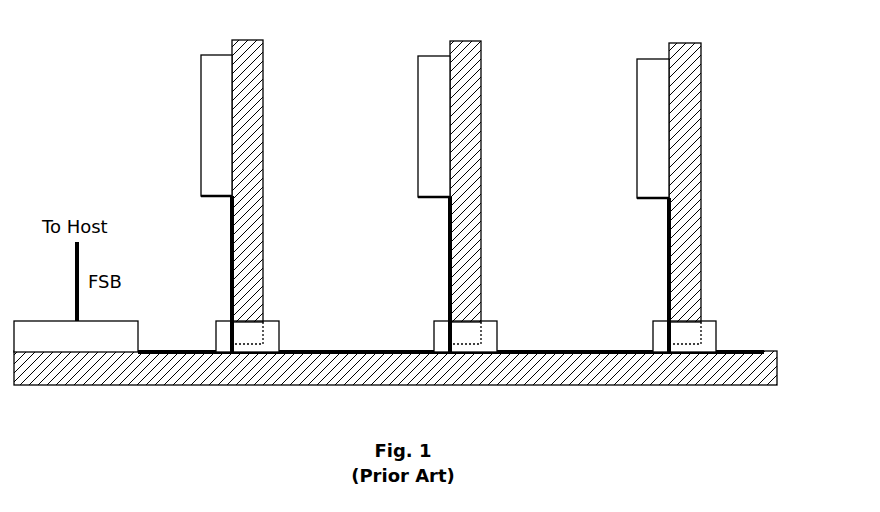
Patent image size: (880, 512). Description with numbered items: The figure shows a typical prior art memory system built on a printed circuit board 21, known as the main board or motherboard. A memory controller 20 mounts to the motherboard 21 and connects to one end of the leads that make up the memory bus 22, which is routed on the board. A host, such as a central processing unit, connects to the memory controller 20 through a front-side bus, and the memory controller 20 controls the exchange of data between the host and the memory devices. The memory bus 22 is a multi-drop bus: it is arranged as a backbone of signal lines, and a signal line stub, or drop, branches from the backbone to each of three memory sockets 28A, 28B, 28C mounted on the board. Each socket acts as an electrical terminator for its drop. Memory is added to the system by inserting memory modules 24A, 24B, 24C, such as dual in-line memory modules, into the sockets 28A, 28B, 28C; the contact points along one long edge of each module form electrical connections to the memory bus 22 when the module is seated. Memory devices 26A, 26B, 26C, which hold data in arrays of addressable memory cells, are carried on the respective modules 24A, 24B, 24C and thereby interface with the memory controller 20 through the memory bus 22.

The memory controller 20 is at (59, 335).
The printed circuit board 21 is at (368, 386).
The memory bus 22 is at (545, 352).
The memory module 24A is at (264, 87).
The memory module 24B is at (481, 88).
The memory module 24C is at (701, 89).
The memory device 26A is at (201, 123).
The memory device 26B is at (418, 124).
The memory device 26C is at (637, 127).
The memory socket 28A is at (279, 337).
The memory socket 28B is at (497, 337).
The memory socket 28C is at (716, 337).